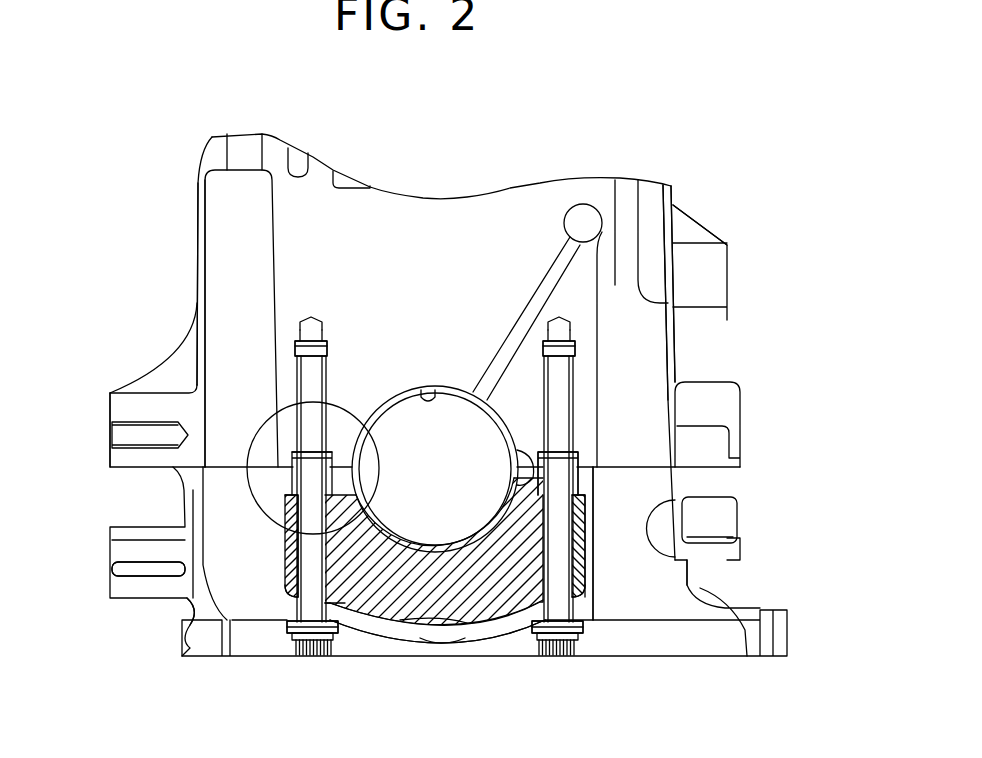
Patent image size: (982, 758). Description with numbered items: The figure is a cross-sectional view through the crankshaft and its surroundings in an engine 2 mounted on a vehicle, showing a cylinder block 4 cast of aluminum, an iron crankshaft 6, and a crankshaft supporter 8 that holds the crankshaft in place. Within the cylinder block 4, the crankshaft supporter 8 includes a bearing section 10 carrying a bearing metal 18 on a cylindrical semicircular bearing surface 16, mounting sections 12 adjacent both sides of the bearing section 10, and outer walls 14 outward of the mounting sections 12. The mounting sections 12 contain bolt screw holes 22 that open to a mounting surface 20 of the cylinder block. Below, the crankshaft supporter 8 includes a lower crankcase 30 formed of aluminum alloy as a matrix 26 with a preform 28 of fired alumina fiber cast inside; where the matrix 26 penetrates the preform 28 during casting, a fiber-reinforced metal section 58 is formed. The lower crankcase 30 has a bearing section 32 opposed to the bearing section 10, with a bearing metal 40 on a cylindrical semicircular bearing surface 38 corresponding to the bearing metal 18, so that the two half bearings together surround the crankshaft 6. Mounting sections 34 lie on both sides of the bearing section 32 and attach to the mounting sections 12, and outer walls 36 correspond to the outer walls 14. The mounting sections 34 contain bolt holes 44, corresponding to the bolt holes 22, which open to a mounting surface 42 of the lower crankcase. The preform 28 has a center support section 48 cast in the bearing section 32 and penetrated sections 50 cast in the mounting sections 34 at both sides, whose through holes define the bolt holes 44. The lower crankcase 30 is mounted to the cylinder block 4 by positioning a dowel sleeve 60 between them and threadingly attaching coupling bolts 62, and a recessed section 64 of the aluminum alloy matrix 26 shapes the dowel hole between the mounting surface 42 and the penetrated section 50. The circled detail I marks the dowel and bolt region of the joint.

The engine 2 is at (733, 164).
The cylinder block 4 is at (706, 229).
The crankshaft 6 is at (458, 413).
The crankshaft supporter 8 is at (120, 512).
The bearing section 10 is at (437, 360).
The mounting sections 12 is at (280, 353).
The outer walls 14 is at (197, 332).
The cylindrical semicircular bearing surface 16 is at (422, 388).
The bearing metal 18 is at (413, 393).
The mounting surface 20 is at (560, 505).
The bolt screw holes 22 is at (300, 390).
The matrix 26 is at (460, 637).
The preform 28 is at (480, 585).
The lower crankcase 30 is at (742, 553).
The bearing section 32 is at (427, 637).
The mounting sections 34 is at (287, 573).
The outer walls 36 is at (240, 490).
The cylindrical semicircular bearing surface 38 is at (478, 506).
The bearing metal 40 is at (480, 515).
The mounting surface 42 is at (580, 462).
The bolt holes 44 is at (285, 622).
The center support section 48 is at (415, 592).
The penetrated sections 50 is at (283, 545).
The fiber-reinforced metal section 58 is at (366, 611).
The dowel sleeve 60 is at (300, 462).
The coupling bolts 62 is at (293, 332).
The recessed section 64 is at (192, 566).
The detail circle I is at (250, 489).